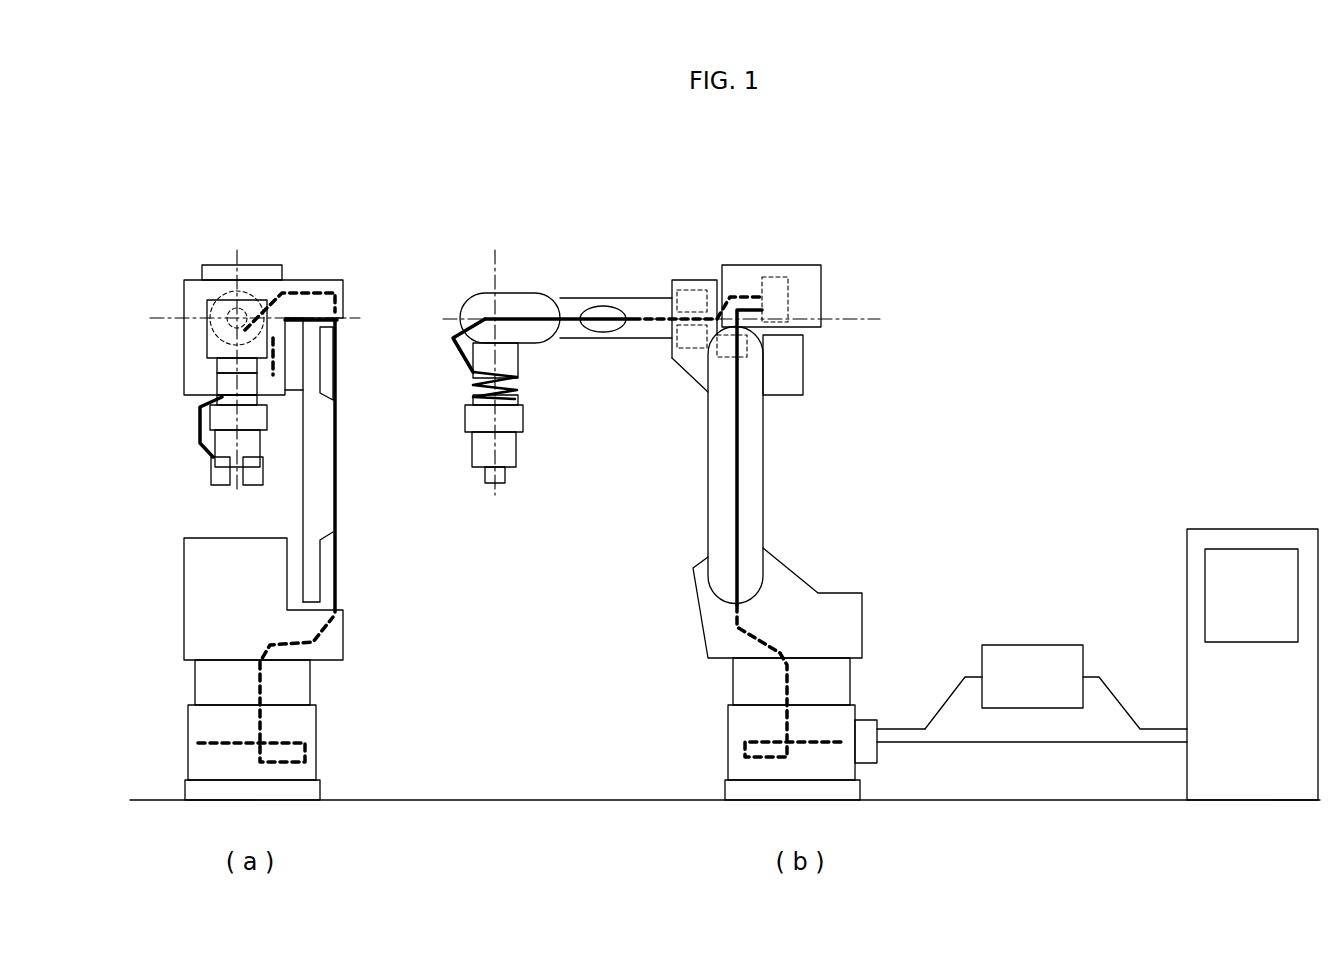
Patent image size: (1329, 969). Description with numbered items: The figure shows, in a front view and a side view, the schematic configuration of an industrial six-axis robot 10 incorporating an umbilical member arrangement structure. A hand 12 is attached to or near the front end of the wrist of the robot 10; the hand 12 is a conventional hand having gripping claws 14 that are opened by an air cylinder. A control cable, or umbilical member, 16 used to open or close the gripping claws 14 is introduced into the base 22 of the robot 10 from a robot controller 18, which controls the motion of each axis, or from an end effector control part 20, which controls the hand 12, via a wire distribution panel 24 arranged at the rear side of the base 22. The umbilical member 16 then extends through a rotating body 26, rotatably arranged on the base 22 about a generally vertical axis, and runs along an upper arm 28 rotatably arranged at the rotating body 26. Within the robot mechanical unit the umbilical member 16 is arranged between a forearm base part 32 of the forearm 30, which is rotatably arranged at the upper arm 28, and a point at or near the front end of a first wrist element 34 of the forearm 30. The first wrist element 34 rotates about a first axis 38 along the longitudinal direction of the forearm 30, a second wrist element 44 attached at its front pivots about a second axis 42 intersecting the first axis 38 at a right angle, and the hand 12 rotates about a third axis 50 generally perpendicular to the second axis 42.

The six-axis robot 10 is at (356, 210).
The hand 12 is at (460, 457).
The gripping claws 14 is at (212, 473).
The control cable 16 is at (333, 580).
The robot controller 18 is at (1248, 527).
The end effector control part 20 is at (1025, 645).
The base 22 is at (320, 722).
The wire distribution panel 24 is at (865, 767).
The rotating body 26 is at (200, 600).
The upper arm 28 is at (327, 510).
The forearm 30 is at (595, 195).
The forearm base part 32 is at (692, 280).
The first wrist element 34 is at (592, 298).
The first axis 38 is at (855, 318).
The second axis 42 is at (162, 318).
The second wrist element 44 is at (505, 358).
The third axis 50 is at (495, 490).